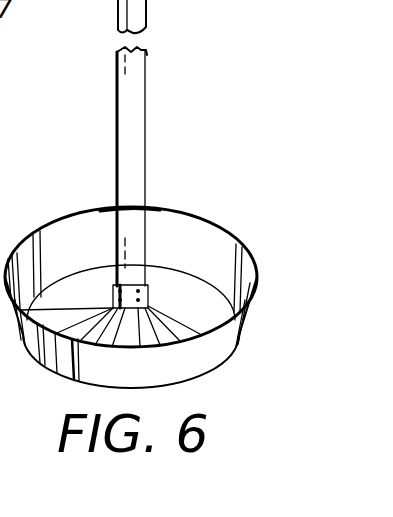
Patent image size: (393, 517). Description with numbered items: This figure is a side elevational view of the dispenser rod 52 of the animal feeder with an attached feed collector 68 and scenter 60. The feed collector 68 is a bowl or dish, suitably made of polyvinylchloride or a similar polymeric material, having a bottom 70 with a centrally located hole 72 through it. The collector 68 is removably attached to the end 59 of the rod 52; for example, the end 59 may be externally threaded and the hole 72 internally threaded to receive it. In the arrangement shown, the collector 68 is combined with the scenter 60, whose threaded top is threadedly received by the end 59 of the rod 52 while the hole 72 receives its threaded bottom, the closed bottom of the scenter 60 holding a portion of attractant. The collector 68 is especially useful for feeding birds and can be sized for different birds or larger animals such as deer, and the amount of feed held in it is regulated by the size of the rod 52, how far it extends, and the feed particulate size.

The rod 52 is at (147, 127).
The end of rod 59 is at (150, 207).
The scenter 60 is at (148, 286).
The feed collector 68 is at (253, 264).
The bottom 70 is at (94, 277).
The hole 72 is at (168, 343).